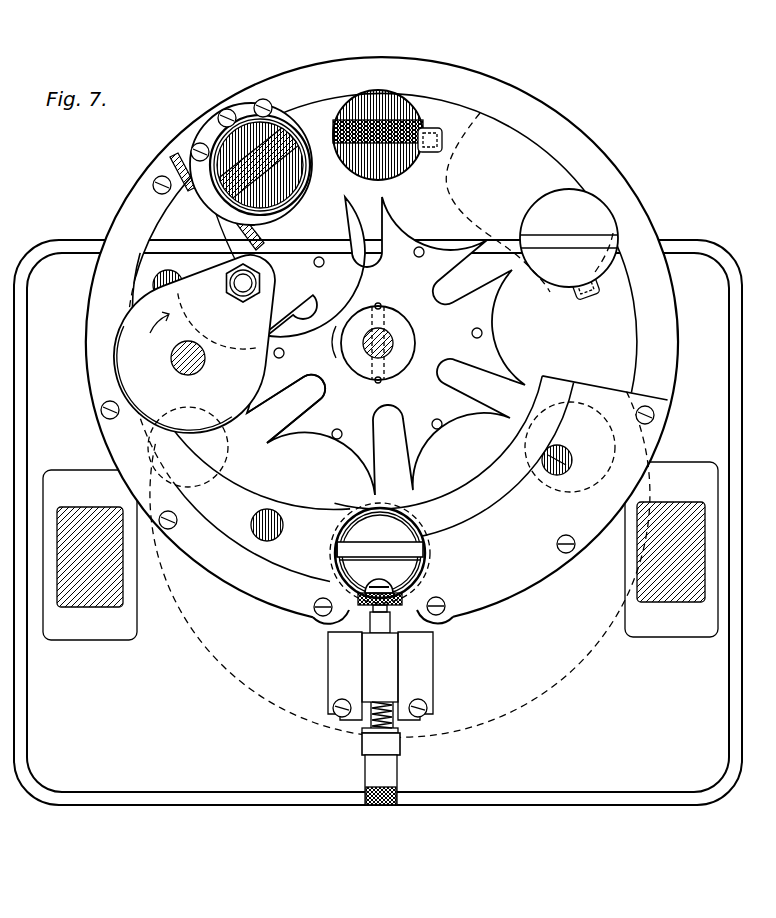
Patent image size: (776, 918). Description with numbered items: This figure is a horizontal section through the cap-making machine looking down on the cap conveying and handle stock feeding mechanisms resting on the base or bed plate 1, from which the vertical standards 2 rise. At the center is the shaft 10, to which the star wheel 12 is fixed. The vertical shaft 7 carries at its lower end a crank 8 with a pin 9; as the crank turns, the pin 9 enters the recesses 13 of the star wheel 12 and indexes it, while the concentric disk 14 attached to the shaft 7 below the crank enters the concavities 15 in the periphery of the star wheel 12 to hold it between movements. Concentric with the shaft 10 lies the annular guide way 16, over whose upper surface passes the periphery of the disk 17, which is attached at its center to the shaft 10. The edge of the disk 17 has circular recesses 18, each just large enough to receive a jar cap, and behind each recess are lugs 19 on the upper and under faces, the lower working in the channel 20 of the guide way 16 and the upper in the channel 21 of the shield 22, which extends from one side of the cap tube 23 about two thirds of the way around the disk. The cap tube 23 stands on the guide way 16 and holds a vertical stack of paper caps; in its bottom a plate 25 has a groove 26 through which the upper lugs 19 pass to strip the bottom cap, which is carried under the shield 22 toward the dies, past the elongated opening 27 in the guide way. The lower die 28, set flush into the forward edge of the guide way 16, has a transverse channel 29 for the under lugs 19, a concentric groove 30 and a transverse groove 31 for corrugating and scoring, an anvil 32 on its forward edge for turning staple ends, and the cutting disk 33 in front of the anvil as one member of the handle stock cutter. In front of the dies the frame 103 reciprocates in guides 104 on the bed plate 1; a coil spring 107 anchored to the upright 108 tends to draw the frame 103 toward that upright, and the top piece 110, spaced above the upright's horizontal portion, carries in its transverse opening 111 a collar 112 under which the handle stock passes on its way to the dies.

The base or bed plate 1 is at (733, 412).
The vertical standards 2 is at (120, 600).
The vertical shaft 7 is at (171, 358).
The crank 8 is at (257, 350).
The pin 9 is at (262, 278).
The shaft 10 is at (395, 330).
The star wheel 12 is at (384, 346).
The recesses 13 is at (306, 290).
The concentric disk 14 is at (268, 390).
The concavities 15 is at (306, 258).
The annular guide way 16 is at (640, 222).
The disk 17 is at (529, 225).
The circular recesses 18 is at (438, 116).
The lugs 19 is at (445, 143).
The channel 20 is at (372, 124).
The channel 21 is at (182, 184).
The shield 22 is at (548, 386).
The cap tube 23 is at (283, 111).
The plate 25 is at (224, 143).
The groove 26 is at (290, 174).
The elongated opening 27 is at (593, 203).
The lower die 28 is at (376, 527).
The groove or channel 29 is at (340, 547).
The concentric groove 30 is at (410, 523).
The transversely extending groove 31 is at (367, 557).
The anvil 32 is at (395, 575).
The cutting disk 33 is at (400, 598).
The frame 103 is at (388, 663).
The guides 104 is at (335, 680).
The coil spring 107 is at (390, 722).
The upright 108 is at (405, 800).
The top piece 110 is at (367, 768).
The transversely extending opening 111 is at (361, 731).
The collar 112 is at (358, 745).